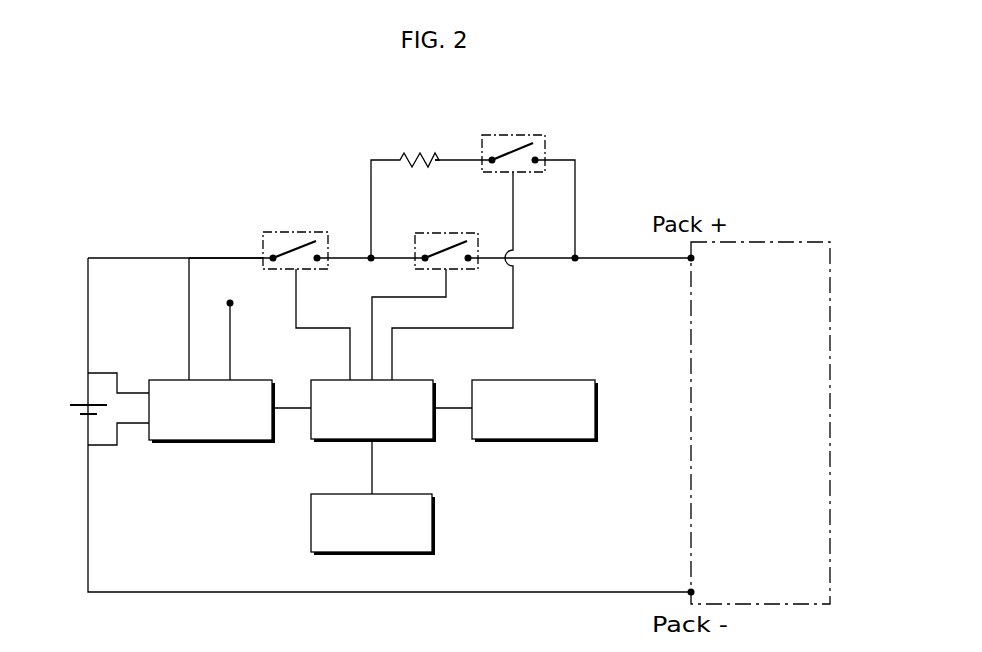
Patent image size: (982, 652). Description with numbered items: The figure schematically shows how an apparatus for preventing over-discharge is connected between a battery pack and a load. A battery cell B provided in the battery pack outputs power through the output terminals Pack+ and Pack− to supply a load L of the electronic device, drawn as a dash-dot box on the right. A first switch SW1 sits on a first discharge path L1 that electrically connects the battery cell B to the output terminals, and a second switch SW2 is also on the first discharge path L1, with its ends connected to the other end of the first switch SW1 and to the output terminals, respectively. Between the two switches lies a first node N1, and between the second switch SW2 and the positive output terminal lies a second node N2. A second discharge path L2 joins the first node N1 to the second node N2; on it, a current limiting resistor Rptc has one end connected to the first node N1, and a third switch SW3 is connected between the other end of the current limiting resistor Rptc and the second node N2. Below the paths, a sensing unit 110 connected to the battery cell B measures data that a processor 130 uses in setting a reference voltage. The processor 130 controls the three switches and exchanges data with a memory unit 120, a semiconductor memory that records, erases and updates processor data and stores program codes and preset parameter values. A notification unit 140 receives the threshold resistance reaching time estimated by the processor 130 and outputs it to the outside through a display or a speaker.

The sensing unit 110 is at (252, 380).
The memory unit 120 is at (565, 380).
The processor 130 is at (413, 380).
The notification unit 140 is at (404, 494).
The battery cell B is at (69, 405).
The first switch SW1 is at (296, 232).
The second switch SW2 is at (446, 233).
The third switch SW3 is at (513, 135).
The current limiting resistor Rptc is at (412, 148).
The first discharge path L1 is at (226, 258).
The second discharge path L2 is at (458, 160).
The first node N1 is at (372, 272).
The second node N2 is at (576, 272).
The load L is at (770, 242).